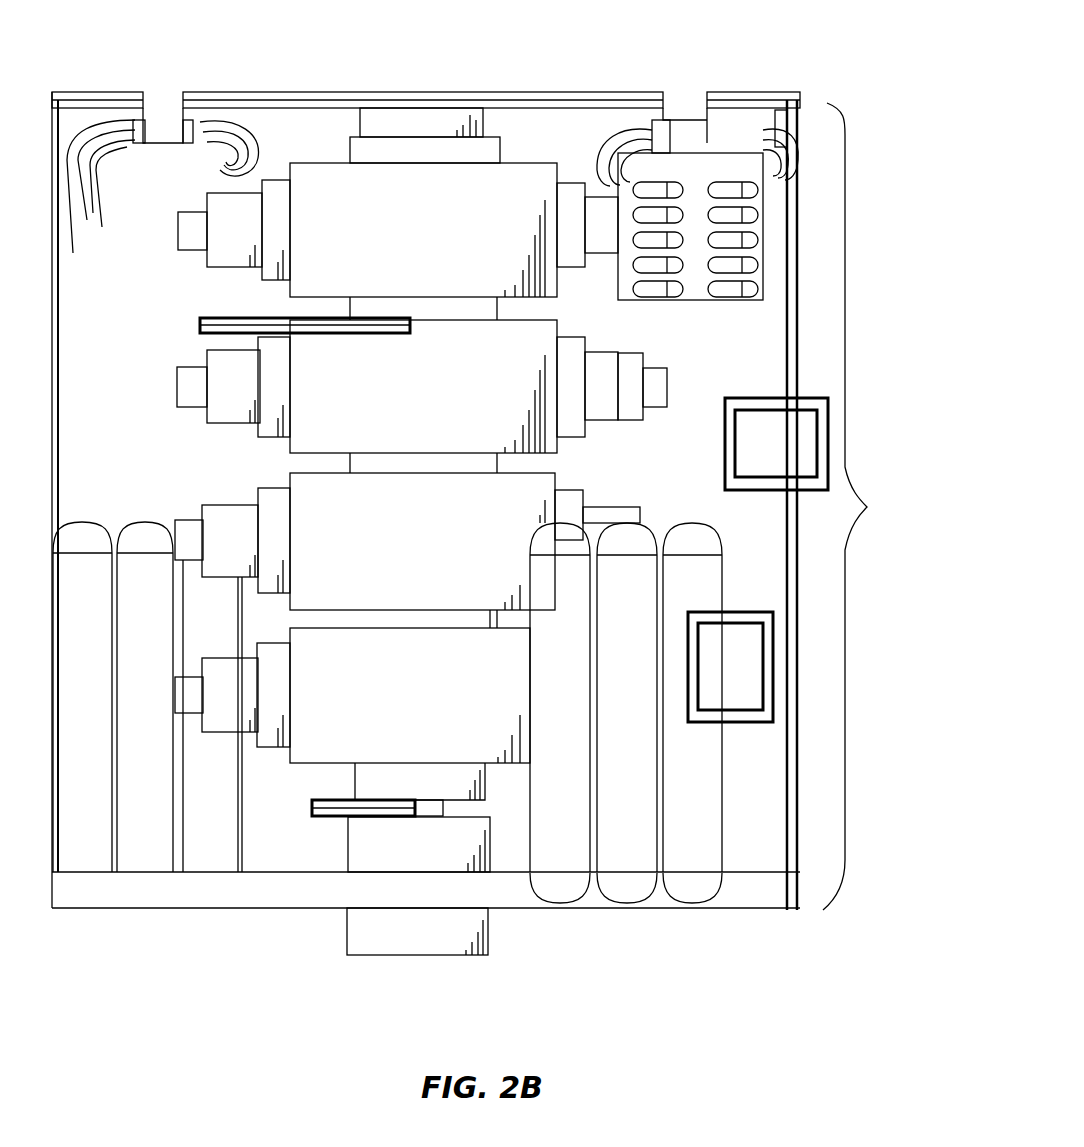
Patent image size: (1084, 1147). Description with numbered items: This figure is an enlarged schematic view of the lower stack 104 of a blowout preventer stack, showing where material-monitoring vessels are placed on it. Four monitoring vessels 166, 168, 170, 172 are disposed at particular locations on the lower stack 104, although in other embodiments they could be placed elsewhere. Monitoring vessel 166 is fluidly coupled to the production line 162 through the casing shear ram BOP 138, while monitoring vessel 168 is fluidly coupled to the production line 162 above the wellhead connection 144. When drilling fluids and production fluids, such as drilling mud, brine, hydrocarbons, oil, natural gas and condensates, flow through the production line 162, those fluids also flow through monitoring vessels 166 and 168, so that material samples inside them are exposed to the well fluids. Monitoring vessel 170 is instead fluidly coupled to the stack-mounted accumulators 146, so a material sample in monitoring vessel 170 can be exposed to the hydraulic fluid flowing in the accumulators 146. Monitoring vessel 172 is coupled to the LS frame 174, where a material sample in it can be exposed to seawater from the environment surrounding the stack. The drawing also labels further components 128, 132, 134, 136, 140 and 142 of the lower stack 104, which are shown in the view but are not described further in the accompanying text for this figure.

The lower stack 104 is at (878, 506).
The coil 128 is at (162, 153).
The connector block 132 is at (770, 235).
The connector pins 134 is at (667, 300).
The module 136 is at (393, 250).
The casing shear ram BOP 138 is at (393, 406).
The module 140 is at (393, 560).
The module 142 is at (393, 715).
The wellhead connection 144 is at (347, 930).
The stack-mounted accumulators 146 is at (628, 577).
The production line 162 is at (428, 103).
The monitoring vessel 166 is at (200, 323).
The monitoring vessel 168 is at (313, 810).
The monitoring vessel 170 is at (750, 722).
The monitoring vessel 172 is at (827, 427).
The LS frame 174 is at (803, 303).